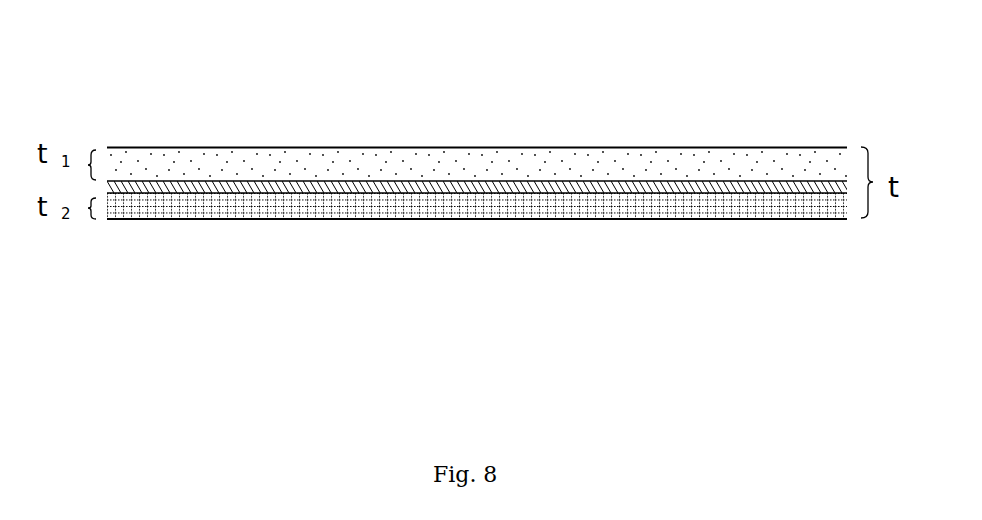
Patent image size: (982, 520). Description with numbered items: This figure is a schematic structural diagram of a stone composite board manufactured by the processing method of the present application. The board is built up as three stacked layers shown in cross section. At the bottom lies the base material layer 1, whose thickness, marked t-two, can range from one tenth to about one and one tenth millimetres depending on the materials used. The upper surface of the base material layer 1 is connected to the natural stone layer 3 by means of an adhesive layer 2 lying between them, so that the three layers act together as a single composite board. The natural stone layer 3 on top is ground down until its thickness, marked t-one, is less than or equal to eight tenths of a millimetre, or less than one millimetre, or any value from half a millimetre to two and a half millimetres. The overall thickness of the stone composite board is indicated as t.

The base material layer 1 is at (183, 217).
The adhesive layer 2 is at (372, 191).
The natural stone layer 3 is at (620, 147).